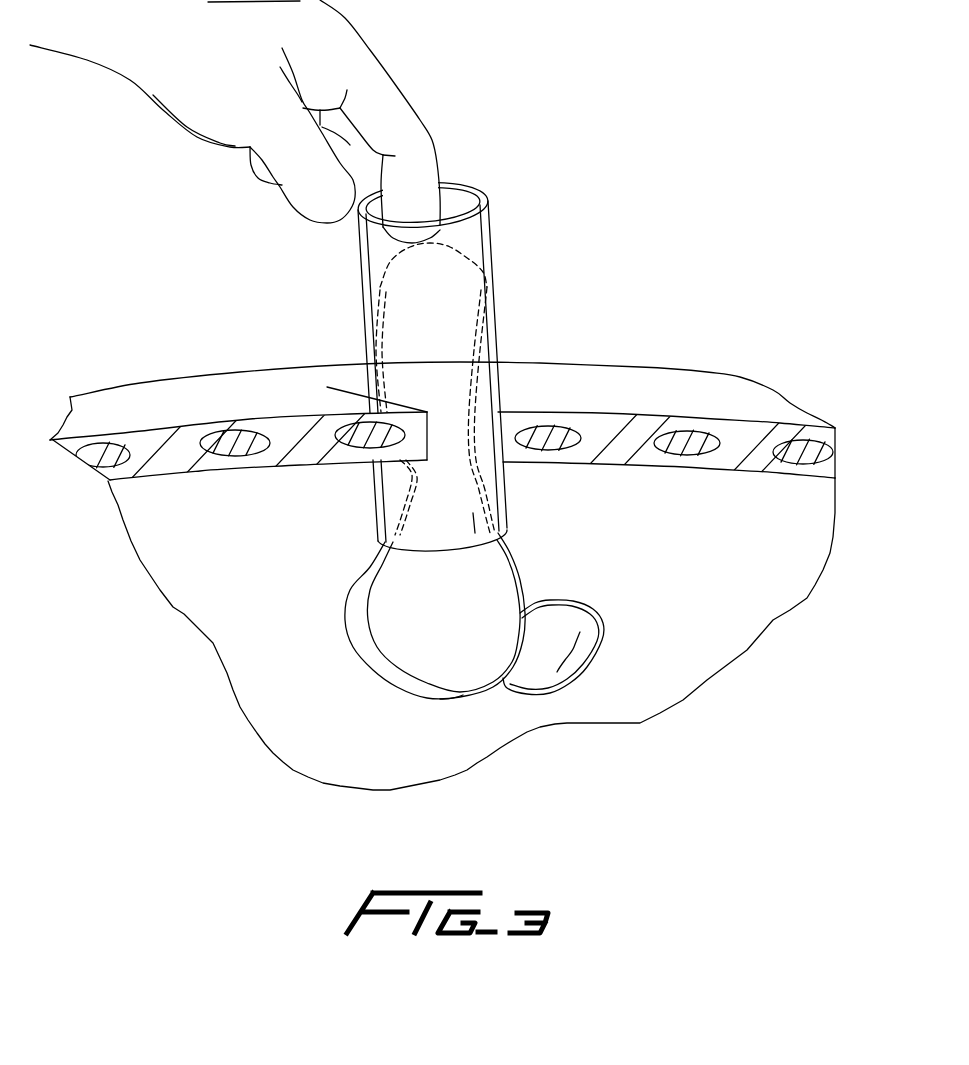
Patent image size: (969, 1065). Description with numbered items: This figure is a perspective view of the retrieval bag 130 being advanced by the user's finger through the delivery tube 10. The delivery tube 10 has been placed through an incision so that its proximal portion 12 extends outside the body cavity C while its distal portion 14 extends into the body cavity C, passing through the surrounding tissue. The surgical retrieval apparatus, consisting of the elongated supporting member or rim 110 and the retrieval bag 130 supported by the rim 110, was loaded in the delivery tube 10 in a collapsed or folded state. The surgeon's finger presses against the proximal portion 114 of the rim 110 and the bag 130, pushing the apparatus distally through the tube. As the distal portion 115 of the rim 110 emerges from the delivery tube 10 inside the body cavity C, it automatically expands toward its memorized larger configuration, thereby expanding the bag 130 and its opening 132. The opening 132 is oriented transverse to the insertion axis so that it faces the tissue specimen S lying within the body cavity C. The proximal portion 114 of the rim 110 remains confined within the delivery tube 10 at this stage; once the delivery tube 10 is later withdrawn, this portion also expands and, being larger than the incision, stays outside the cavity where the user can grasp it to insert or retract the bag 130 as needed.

The delivery tube 10 is at (483, 257).
The proximal portion of delivery tube 12 is at (530, 192).
The distal portion of delivery tube 14 is at (542, 497).
The rim 110 is at (378, 310).
The proximal portion of rim 114 is at (440, 257).
The distal portion of rim 115 is at (463, 693).
The retrieval bag 130 is at (386, 595).
The opening of bag 132 is at (428, 645).
The body cavity C is at (277, 535).
The tissue specimen S is at (558, 673).